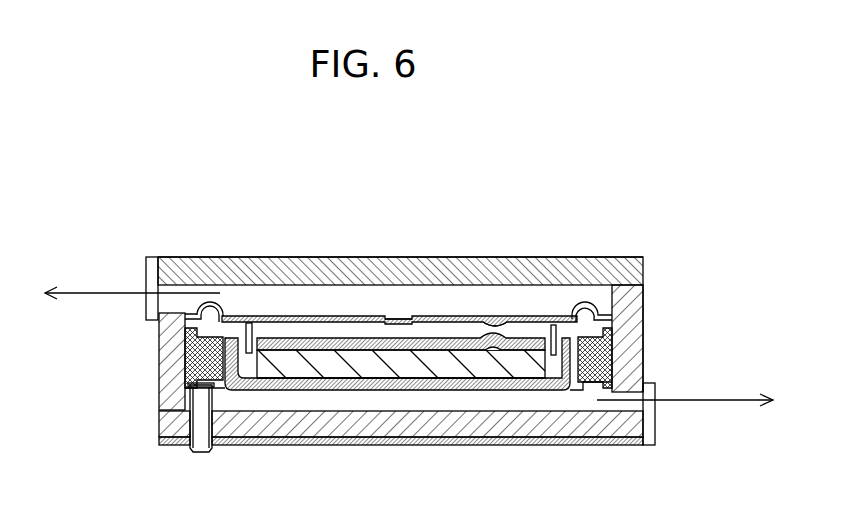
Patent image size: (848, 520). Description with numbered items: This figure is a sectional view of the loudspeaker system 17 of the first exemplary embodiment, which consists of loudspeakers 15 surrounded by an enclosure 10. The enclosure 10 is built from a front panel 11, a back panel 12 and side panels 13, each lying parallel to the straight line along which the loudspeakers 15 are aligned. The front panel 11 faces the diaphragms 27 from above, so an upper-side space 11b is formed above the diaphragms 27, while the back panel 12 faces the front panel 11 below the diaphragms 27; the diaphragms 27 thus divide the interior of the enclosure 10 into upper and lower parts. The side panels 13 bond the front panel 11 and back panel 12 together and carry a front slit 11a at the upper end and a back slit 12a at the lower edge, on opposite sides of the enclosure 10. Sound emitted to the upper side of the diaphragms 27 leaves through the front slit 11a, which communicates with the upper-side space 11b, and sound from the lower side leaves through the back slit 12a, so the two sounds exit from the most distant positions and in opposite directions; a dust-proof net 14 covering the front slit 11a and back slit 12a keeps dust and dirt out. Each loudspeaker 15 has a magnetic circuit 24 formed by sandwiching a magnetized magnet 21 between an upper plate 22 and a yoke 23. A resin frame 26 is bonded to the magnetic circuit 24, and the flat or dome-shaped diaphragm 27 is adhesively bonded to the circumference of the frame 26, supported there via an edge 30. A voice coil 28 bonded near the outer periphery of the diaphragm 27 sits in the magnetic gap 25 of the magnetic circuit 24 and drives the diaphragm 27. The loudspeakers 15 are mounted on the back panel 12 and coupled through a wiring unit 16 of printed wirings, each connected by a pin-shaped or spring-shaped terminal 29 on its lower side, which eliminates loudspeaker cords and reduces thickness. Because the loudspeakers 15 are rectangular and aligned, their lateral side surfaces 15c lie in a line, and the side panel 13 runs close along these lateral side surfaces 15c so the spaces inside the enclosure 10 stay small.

The enclosure 10 is at (377, 215).
The front panel 11 is at (180, 267).
The front slit 11a is at (180, 303).
The upper-side space 11b is at (402, 303).
The back panel 12 is at (612, 440).
The back slit 12a is at (622, 398).
The side panel 13 is at (627, 302).
The dust-proof net 14 is at (154, 268).
The loudspeaker 15 is at (459, 305).
The lateral side surface 15c is at (630, 345).
The wiring unit 16 is at (555, 428).
The loudspeaker system 17 is at (588, 245).
The magnet 21 is at (447, 363).
The upper plate 22 is at (425, 348).
The yoke 23 is at (482, 383).
The magnetic circuit 24 is at (350, 393).
The magnetic gap 25 is at (248, 352).
The frame 26 is at (205, 353).
The diaphragm 27 is at (341, 315).
The voice coil 28 is at (252, 318).
The terminal 29 is at (205, 402).
The edge 30 is at (595, 303).